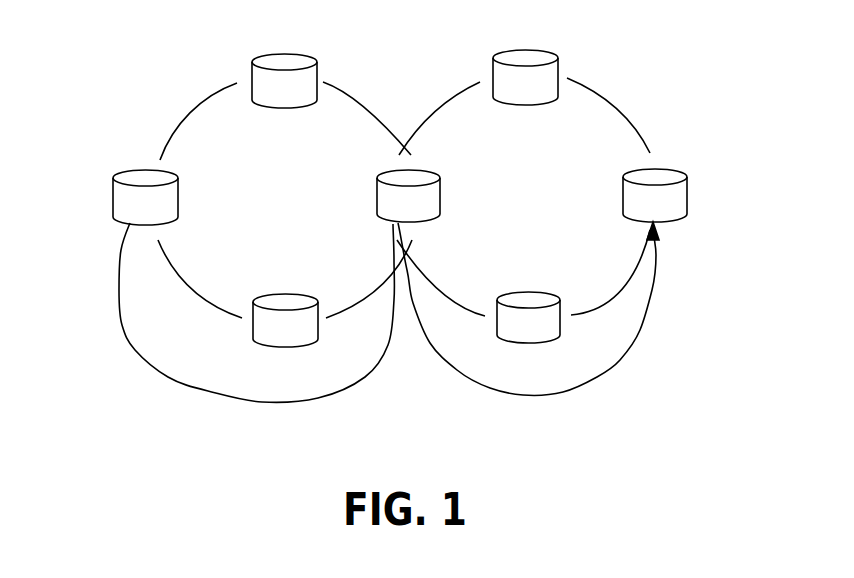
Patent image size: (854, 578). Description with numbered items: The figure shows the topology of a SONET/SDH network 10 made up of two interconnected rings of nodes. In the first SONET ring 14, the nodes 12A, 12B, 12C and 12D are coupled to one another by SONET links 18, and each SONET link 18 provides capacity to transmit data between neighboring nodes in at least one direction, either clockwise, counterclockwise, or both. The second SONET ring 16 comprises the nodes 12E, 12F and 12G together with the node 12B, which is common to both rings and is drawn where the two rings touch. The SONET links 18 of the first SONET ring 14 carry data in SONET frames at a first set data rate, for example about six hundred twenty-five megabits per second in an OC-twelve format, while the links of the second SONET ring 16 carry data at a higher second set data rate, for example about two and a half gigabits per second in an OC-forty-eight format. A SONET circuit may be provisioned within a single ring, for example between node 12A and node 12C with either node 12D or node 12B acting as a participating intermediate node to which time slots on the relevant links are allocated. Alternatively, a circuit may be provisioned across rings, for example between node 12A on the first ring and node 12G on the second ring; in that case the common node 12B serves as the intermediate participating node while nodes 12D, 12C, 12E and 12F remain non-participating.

The optical communication network 10 is at (207, 106).
The node 12A is at (256, 55).
The node 12B is at (388, 168).
The node 12C is at (262, 293).
The node 12D is at (126, 170).
The node 12E is at (548, 52).
The node 12F is at (675, 164).
The node 12G is at (548, 292).
The first SONET ring 14 is at (175, 102).
The second SONET ring 16 is at (657, 97).
The SONET link 18 is at (351, 104).